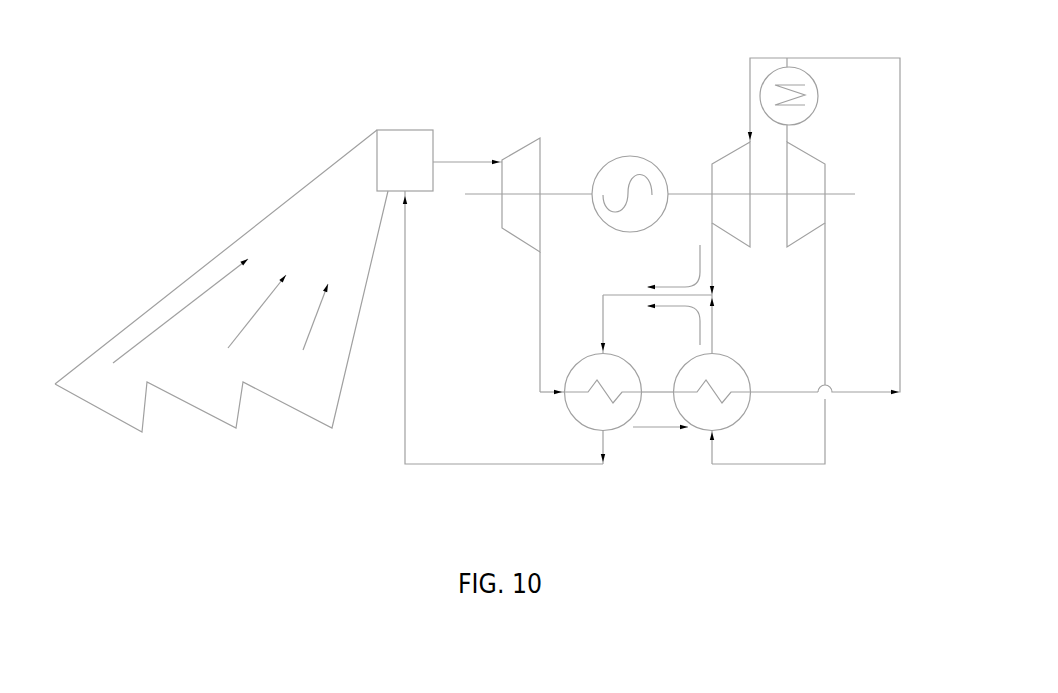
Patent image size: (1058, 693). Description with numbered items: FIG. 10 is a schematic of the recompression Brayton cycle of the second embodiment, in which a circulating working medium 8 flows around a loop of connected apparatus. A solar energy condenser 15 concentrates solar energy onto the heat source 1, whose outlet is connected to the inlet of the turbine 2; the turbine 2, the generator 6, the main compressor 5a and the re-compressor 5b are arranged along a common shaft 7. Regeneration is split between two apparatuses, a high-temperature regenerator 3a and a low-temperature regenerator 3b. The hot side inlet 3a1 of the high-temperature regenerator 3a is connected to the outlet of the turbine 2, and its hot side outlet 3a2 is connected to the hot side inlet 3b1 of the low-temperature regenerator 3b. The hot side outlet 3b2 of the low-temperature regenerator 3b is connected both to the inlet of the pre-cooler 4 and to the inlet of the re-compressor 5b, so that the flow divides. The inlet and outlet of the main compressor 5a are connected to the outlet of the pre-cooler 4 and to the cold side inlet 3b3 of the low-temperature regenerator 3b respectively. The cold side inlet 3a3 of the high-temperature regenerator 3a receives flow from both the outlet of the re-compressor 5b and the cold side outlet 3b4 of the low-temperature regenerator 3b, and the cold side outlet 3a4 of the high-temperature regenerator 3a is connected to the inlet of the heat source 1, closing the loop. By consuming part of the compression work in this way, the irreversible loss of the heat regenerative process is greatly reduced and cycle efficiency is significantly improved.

The heat source 1 is at (405, 129).
The turbine 2 is at (510, 153).
The high-temperature regenerator 3a is at (617, 428).
The hot side inlet 3a1 is at (563, 395).
The hot side outlet 3a2 is at (642, 388).
The cold side inlet 3a3 is at (600, 352).
The cold side outlet 3a4 is at (600, 428).
The low-temperature regenerator 3b is at (693, 428).
The hot side inlet 3b1 is at (673, 376).
The hot side outlet 3b2 is at (750, 392).
The cold side inlet 3b3 is at (713, 352).
The cold side outlet 3b4 is at (710, 430).
The pre-cooler 4 is at (807, 72).
The main compressor 5a is at (813, 157).
The re-compressor 5b is at (733, 151).
The generator 6 is at (609, 161).
The shaft 7 is at (482, 195).
The circulating working medium 8 is at (415, 346).
The solar energy condenser 15 is at (188, 425).